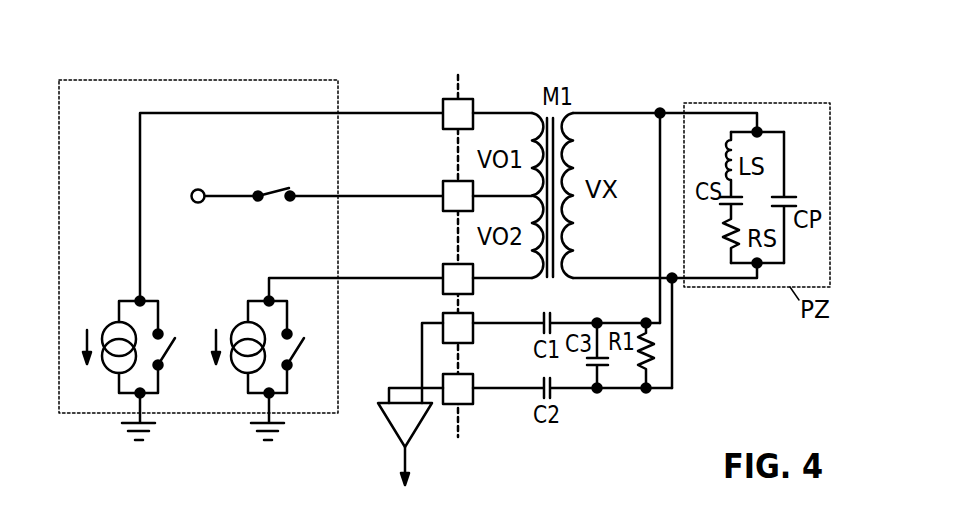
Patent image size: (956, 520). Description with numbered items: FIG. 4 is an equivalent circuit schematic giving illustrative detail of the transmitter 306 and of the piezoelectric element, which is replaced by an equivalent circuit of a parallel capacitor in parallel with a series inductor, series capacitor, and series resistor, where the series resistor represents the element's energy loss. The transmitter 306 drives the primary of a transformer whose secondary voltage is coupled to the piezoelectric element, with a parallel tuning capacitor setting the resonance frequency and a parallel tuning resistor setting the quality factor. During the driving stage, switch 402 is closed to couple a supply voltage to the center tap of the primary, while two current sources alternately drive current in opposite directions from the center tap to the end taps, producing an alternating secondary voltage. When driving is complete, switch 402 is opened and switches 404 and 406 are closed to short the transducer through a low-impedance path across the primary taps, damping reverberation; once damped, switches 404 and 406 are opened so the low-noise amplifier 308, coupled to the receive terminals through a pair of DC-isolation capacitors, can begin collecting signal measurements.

The transmitter 306 is at (177, 80).
The switch 402 is at (270, 191).
The switch 404 is at (165, 354).
The switch 406 is at (294, 354).
The low-noise amplifier 308 is at (398, 443).